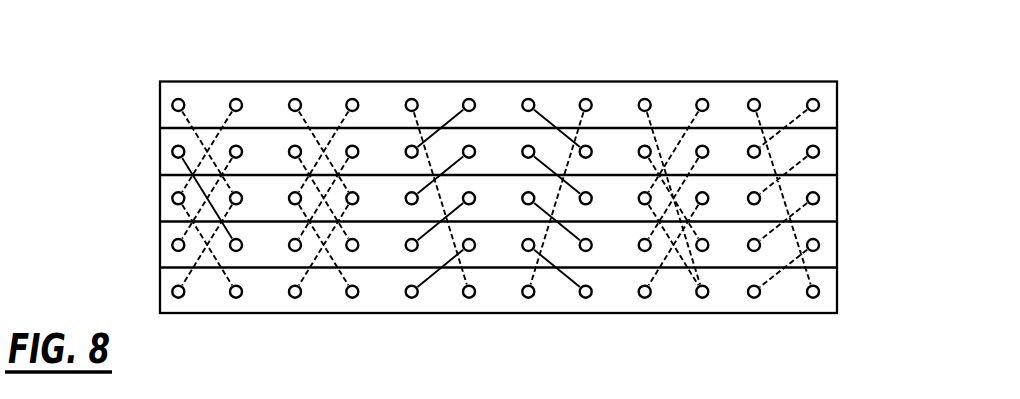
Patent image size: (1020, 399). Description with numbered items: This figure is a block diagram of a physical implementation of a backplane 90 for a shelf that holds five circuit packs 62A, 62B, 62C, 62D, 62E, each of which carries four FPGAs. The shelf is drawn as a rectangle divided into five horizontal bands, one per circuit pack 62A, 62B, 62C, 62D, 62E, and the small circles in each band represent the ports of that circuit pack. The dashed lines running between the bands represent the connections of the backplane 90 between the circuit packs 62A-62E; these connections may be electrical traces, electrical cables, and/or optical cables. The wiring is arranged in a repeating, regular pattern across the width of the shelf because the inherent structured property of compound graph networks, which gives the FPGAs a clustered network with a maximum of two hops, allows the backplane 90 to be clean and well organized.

The backplane 90 is at (541, 156).
The circuit pack 62A is at (837, 97).
The circuit pack 62B is at (837, 143).
The circuit pack 62C is at (837, 191).
The circuit pack 62D is at (837, 239).
The circuit pack 62E is at (837, 286).